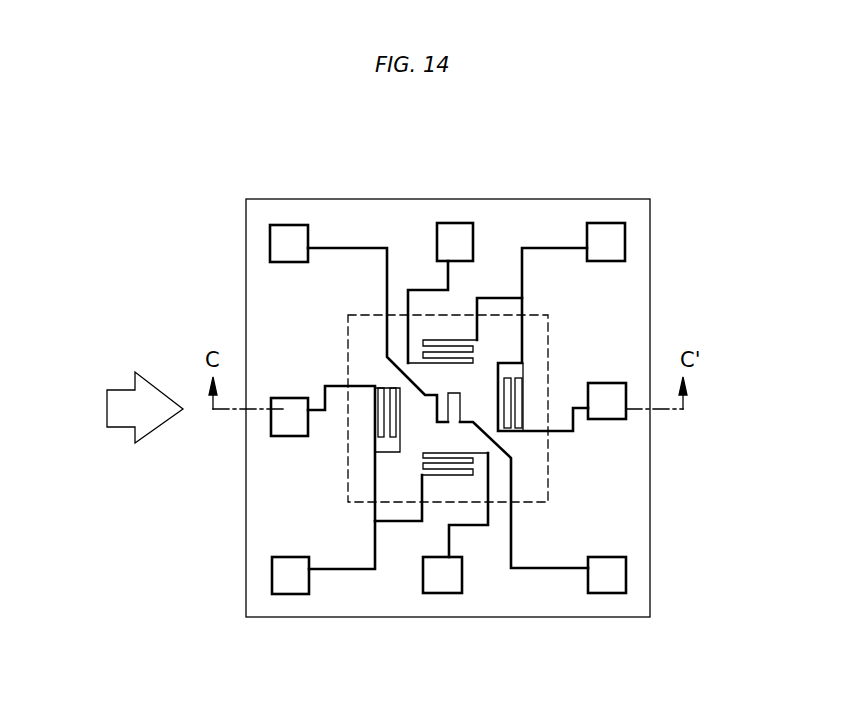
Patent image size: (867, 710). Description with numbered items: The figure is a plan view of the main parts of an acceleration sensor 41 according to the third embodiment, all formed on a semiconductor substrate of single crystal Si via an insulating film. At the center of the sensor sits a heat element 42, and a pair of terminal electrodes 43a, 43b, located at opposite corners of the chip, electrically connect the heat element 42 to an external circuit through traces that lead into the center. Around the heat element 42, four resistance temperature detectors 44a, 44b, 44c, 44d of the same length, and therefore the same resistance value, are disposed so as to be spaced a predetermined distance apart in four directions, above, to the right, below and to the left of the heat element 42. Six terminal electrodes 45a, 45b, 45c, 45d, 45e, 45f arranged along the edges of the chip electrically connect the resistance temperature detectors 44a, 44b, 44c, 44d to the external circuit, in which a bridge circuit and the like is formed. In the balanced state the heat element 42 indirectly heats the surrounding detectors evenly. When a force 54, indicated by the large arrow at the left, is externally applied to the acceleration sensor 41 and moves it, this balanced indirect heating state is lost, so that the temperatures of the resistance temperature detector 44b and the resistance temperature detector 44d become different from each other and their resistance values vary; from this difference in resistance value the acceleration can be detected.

The acceleration sensor 41 is at (588, 187).
The heat element 42 is at (466, 396).
The terminal electrode 43a is at (626, 575).
The terminal electrode 43b is at (270, 240).
The resistance temperature detector 44a is at (422, 343).
The resistance temperature detector 44b is at (527, 388).
The resistance temperature detector 44c is at (480, 462).
The resistance temperature detector 44d is at (376, 432).
The terminal electrode 45a is at (455, 224).
The terminal electrode 45b is at (625, 243).
The terminal electrode 45c is at (626, 418).
The terminal electrode 45d is at (438, 594).
The terminal electrode 45e is at (272, 578).
The terminal electrode 45f is at (271, 425).
The force 54 is at (117, 391).